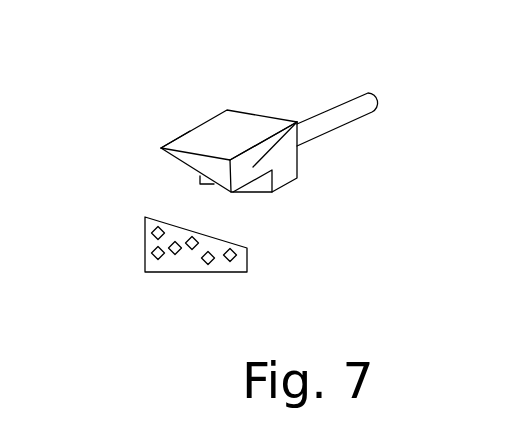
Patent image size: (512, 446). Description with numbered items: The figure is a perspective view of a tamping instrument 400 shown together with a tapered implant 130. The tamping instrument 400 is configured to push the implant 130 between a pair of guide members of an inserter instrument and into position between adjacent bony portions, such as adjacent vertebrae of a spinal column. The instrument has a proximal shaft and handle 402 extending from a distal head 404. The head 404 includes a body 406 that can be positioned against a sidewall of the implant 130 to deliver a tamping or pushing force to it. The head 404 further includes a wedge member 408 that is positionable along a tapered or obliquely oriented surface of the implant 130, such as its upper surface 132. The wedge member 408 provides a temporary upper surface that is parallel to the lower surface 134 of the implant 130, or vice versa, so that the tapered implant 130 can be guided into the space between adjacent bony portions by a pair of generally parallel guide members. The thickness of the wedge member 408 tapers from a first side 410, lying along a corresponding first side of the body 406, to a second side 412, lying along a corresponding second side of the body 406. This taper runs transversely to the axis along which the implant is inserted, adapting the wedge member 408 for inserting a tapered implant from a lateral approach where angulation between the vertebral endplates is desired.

The tamping instrument 400 is at (362, 174).
The proximal shaft and handle 402 is at (372, 112).
The distal head 404 is at (253, 98).
The body 406 is at (283, 175).
The wedge member 408 is at (192, 162).
The first side 410 is at (297, 122).
The second side 412 is at (172, 145).
The implant 130 is at (281, 283).
The upper surface 132 is at (210, 230).
The lower surface 134 is at (173, 272).